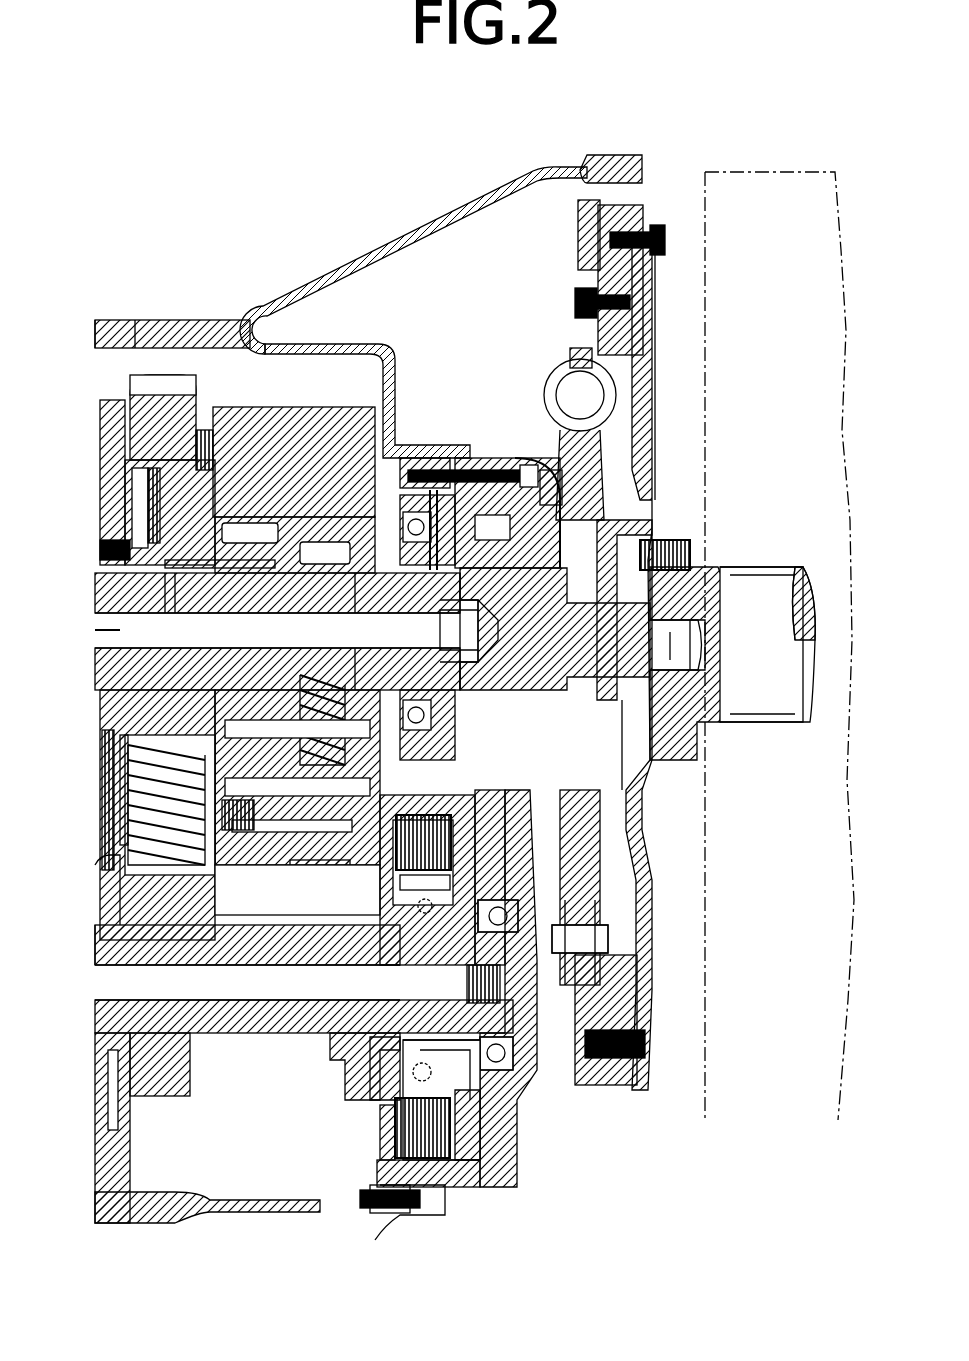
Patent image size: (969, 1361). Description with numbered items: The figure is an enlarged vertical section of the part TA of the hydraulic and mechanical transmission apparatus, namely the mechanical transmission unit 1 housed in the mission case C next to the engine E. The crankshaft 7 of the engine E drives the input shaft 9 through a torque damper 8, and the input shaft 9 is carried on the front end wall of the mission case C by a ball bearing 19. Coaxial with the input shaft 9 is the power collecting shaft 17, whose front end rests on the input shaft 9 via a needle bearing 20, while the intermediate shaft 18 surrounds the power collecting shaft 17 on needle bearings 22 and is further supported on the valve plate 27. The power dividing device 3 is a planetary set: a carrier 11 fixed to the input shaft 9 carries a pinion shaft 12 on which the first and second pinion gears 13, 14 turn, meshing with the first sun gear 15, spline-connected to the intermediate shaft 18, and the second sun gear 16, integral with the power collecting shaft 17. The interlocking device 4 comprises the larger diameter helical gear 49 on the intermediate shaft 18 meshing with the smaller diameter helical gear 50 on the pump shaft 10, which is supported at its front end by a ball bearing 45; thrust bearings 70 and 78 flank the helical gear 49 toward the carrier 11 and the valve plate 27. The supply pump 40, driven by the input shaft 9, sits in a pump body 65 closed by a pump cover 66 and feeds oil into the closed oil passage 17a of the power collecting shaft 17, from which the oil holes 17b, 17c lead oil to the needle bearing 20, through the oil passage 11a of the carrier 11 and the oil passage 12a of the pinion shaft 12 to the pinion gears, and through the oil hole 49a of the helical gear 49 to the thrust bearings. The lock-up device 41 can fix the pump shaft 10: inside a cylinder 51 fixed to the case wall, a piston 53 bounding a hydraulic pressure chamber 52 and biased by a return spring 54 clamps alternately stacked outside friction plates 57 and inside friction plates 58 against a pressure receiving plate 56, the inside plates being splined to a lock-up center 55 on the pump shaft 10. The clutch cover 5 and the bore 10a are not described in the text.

The mechanical transmission unit 1 is at (342, 226).
The power dividing device 3 is at (268, 405).
The interlocking device 4 is at (170, 376).
The clutch cover 5 is at (600, 525).
The crankshaft 7 is at (810, 658).
The torque damper 8 is at (548, 365).
The input shaft 9 is at (510, 653).
The pump shaft 10 is at (100, 958).
The housing bore 10a is at (222, 968).
The carrier 11 is at (345, 440).
The oil passage 11a is at (360, 818).
The pinion shaft 12 is at (255, 860).
The oil passage 12a is at (135, 805).
The first pinion gear 13 is at (232, 875).
The second pinion gear 14 is at (310, 902).
The first sun gear 15 is at (250, 525).
The second sun gear 16 is at (330, 552).
The power collecting shaft 17 is at (100, 594).
The oil passage 17a is at (108, 634).
The oil hole 17b is at (365, 636).
The oil hole 17c is at (155, 580).
The intermediate shaft 18 is at (102, 700).
The ball bearing 19 is at (427, 625).
The needle bearing 20 is at (440, 640).
The needle bearing 22 is at (272, 590).
The valve plate 27 is at (112, 406).
The supply pump 40 is at (497, 460).
The lock-up device 41 is at (495, 1160).
The ball bearing 45 is at (515, 1078).
The larger diameter helical gear 49 is at (132, 455).
The oil hole 49a is at (104, 755).
The smaller diameter helical gear 50 is at (162, 1096).
The cylinder 51 is at (442, 1212).
The hydraulic pressure chamber 52 is at (515, 1140).
The piston 53 is at (455, 1170).
The return spring 54 is at (386, 1100).
The lock-up center 55 is at (352, 1068).
The pressure receiving plate 56 is at (378, 1135).
The outside friction plates 57 is at (430, 815).
The inside friction plates 58 is at (485, 878).
The pump body 65 is at (470, 455).
The pump cover 66 is at (530, 455).
The thrust bearing 70 is at (150, 490).
The thrust bearing 78 is at (108, 545).
The mission case C is at (170, 325).
The engine E is at (782, 182).
The part of the transmission apparatus TA is at (378, 246).